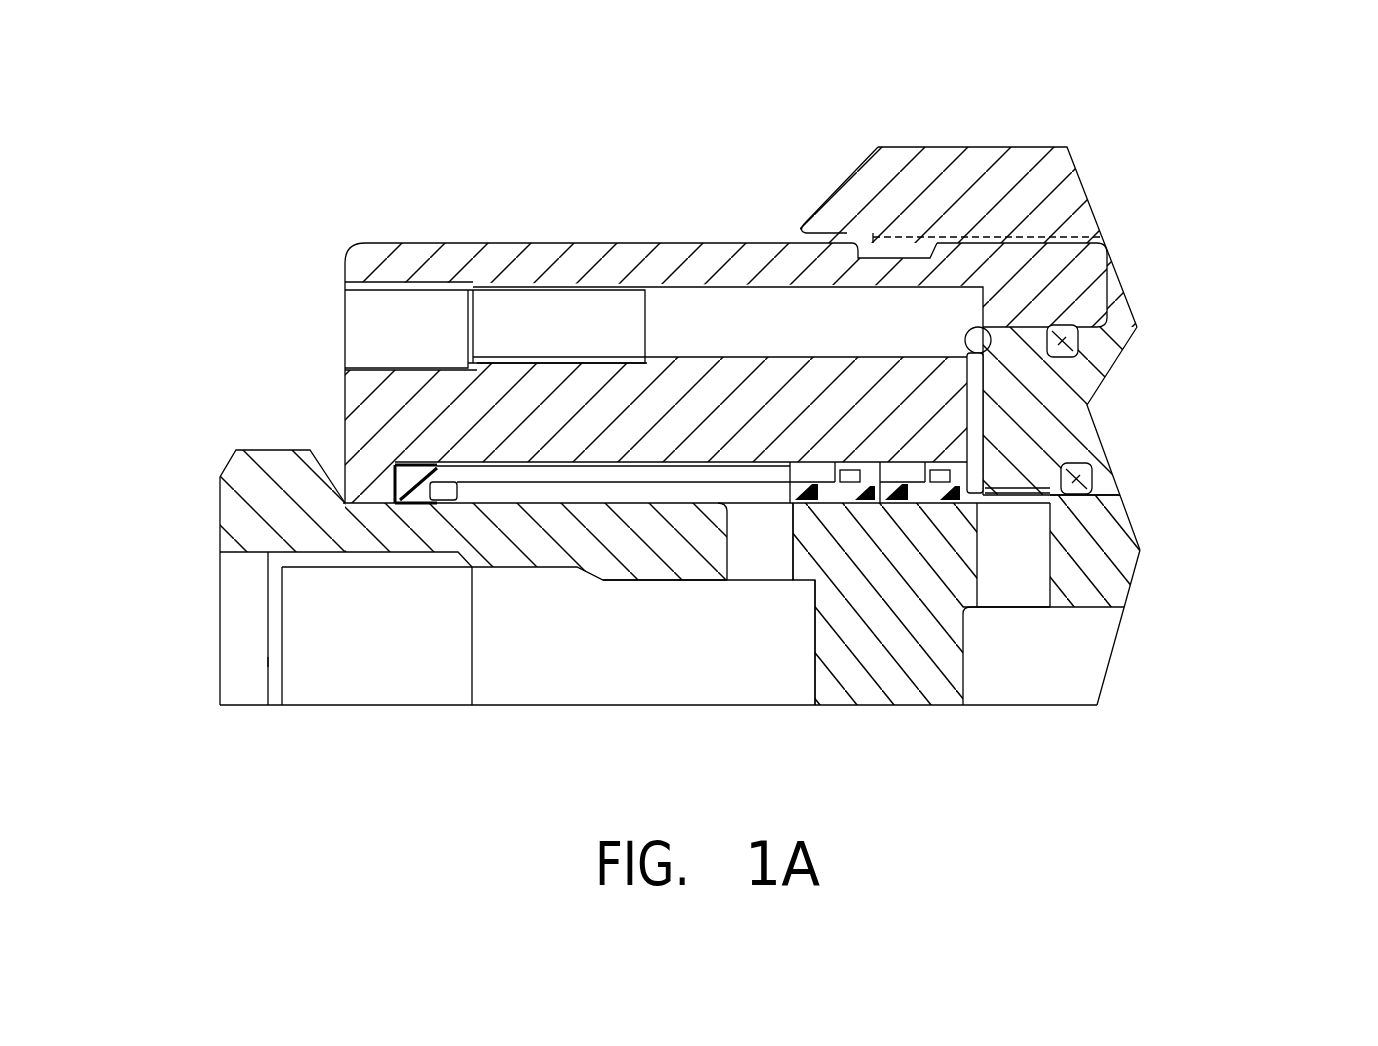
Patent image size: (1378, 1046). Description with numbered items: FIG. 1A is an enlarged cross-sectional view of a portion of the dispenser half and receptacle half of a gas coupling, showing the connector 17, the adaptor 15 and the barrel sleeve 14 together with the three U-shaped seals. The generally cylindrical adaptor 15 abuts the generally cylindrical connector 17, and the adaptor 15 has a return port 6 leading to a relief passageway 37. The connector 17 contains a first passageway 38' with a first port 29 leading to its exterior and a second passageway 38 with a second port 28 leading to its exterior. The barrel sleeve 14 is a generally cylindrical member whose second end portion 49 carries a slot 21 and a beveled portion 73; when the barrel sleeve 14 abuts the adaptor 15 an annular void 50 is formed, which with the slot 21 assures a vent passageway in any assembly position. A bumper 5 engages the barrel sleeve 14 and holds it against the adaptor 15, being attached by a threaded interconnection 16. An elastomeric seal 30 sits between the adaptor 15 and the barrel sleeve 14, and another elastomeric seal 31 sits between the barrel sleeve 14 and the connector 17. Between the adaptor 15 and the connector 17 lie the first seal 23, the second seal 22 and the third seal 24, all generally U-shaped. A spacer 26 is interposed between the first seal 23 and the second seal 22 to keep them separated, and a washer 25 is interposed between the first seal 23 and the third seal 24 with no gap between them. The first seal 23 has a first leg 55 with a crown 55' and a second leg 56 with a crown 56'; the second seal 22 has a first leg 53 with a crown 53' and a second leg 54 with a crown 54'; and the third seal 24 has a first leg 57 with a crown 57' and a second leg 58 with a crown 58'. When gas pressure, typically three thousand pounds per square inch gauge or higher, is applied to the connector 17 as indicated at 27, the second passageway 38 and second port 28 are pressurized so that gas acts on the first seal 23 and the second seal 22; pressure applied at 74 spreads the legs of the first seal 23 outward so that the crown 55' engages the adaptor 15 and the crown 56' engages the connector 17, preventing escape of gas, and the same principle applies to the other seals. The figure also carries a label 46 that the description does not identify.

The bumper 5 is at (907, 187).
The return port 6 is at (380, 328).
The barrel sleeve 14 is at (1037, 378).
The adaptor 15 is at (477, 262).
The threaded interconnection 16 is at (987, 243).
The connector 17 is at (620, 543).
The slot 21 is at (972, 415).
The second seal 22 is at (402, 484).
The first seal 23 is at (868, 503).
The third seal 24 is at (985, 493).
The washer 25 is at (925, 505).
The spacer 26 is at (537, 563).
The applied pressure 27 is at (262, 664).
The second port 28 is at (760, 545).
The first port 29 is at (1020, 545).
The elastomeric seal 30 is at (1105, 305).
The elastomeric seal 31 is at (1100, 467).
The relief passageway 37 is at (677, 323).
The second passageway 38 is at (658, 611).
The first passageway 38' is at (1134, 681).
The channel 46 is at (895, 503).
The second end portion 49 is at (905, 245).
The annular void 50 is at (875, 292).
The first leg 53 is at (324, 450).
The crown 53' is at (346, 416).
The second leg 54 is at (346, 628).
The crown 54' is at (377, 629).
The first leg 55 is at (797, 410).
The crown 55' is at (757, 409).
The second leg 56 is at (857, 621).
The crown 56' is at (822, 632).
The first leg 57 is at (902, 410).
The crown 57' is at (864, 406).
The second leg 58 is at (1088, 512).
The crown 58' is at (1015, 617).
The beveled portion 73 is at (965, 334).
The applied pressure 74 is at (793, 503).